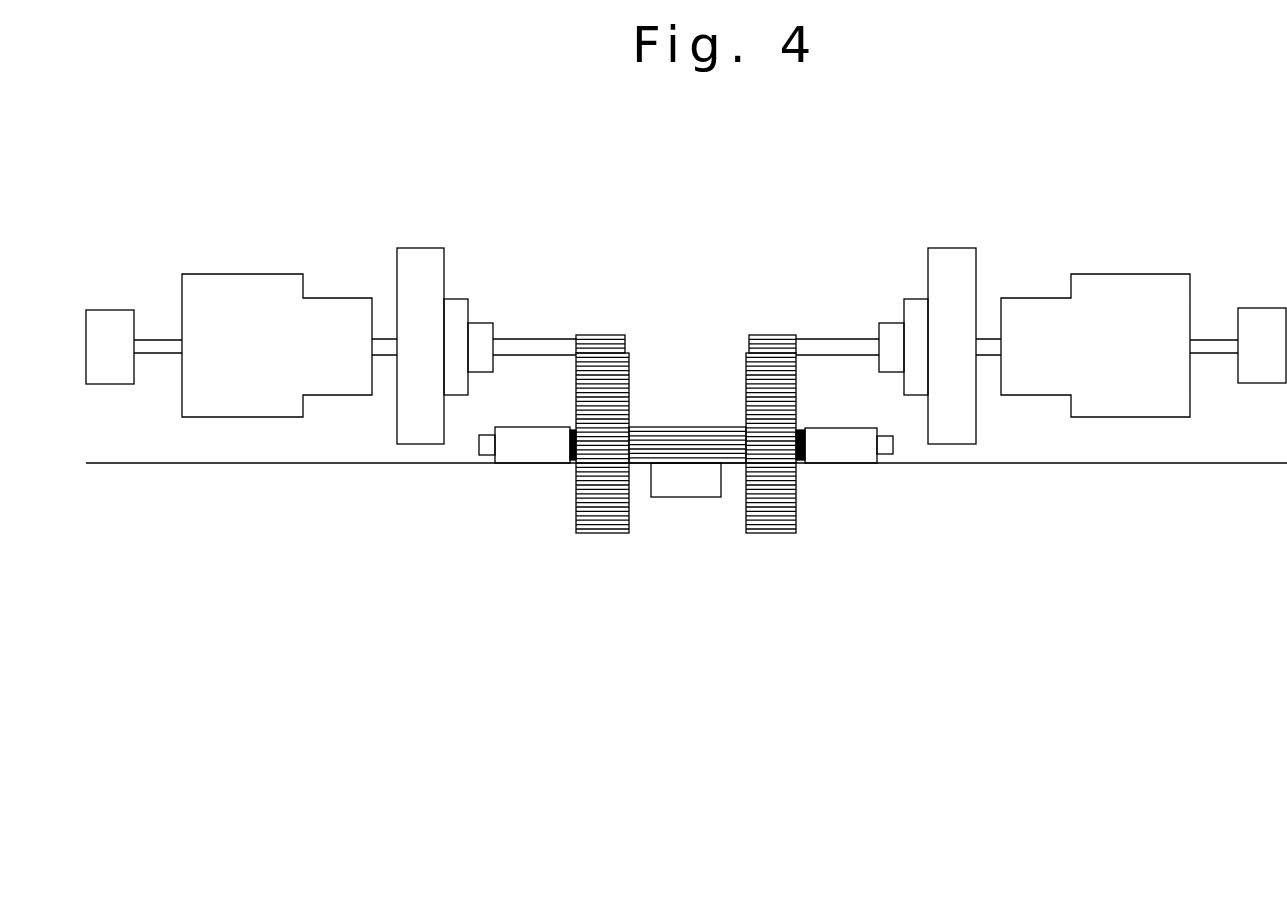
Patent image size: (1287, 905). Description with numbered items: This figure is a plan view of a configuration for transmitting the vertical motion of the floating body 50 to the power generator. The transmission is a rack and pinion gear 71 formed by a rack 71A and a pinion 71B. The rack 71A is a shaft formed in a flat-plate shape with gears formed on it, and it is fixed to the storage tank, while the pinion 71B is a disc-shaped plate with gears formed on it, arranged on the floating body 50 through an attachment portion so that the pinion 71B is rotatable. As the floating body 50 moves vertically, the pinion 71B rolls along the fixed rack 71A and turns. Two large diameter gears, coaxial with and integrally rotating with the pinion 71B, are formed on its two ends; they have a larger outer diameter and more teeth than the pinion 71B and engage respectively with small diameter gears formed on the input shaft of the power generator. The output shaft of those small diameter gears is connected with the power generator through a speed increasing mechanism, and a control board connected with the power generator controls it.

The floating body 50 is at (1155, 443).
The rack and pinion gear 71 is at (685, 426).
The rack 71A is at (687, 480).
The pinion 71B is at (687, 430).